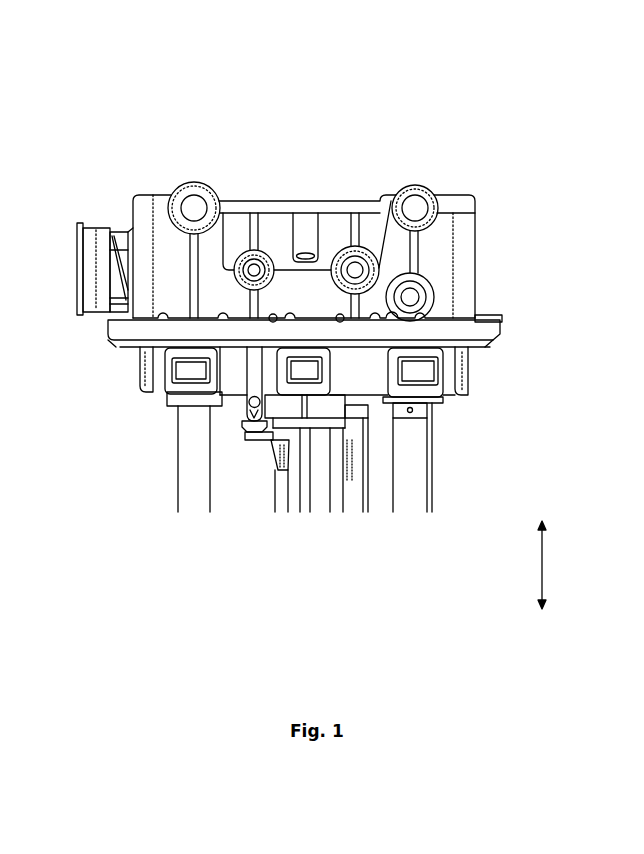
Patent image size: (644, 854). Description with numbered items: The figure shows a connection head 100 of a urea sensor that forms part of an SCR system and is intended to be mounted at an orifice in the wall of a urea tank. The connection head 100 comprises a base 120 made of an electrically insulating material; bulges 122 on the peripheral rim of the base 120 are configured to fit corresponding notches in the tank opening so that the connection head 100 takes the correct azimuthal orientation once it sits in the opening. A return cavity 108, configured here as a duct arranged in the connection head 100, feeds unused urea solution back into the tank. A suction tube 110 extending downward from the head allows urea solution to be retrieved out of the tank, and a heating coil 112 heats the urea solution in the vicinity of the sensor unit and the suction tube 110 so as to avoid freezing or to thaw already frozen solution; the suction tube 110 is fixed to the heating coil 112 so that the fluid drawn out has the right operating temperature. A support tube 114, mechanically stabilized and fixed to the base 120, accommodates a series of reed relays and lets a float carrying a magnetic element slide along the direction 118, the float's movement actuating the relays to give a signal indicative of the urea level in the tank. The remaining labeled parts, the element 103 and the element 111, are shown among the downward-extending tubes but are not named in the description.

The connection head 100 is at (476, 120).
The fluid conduit 103 is at (353, 497).
The return cavity 108 is at (252, 438).
The suction tube 110 is at (412, 507).
The leg outer wall 111 is at (433, 465).
The heating coil 112 is at (197, 502).
The support tube 114 is at (287, 498).
The direction 118 is at (562, 565).
The base 120 is at (493, 313).
The bulges 122 is at (490, 327).